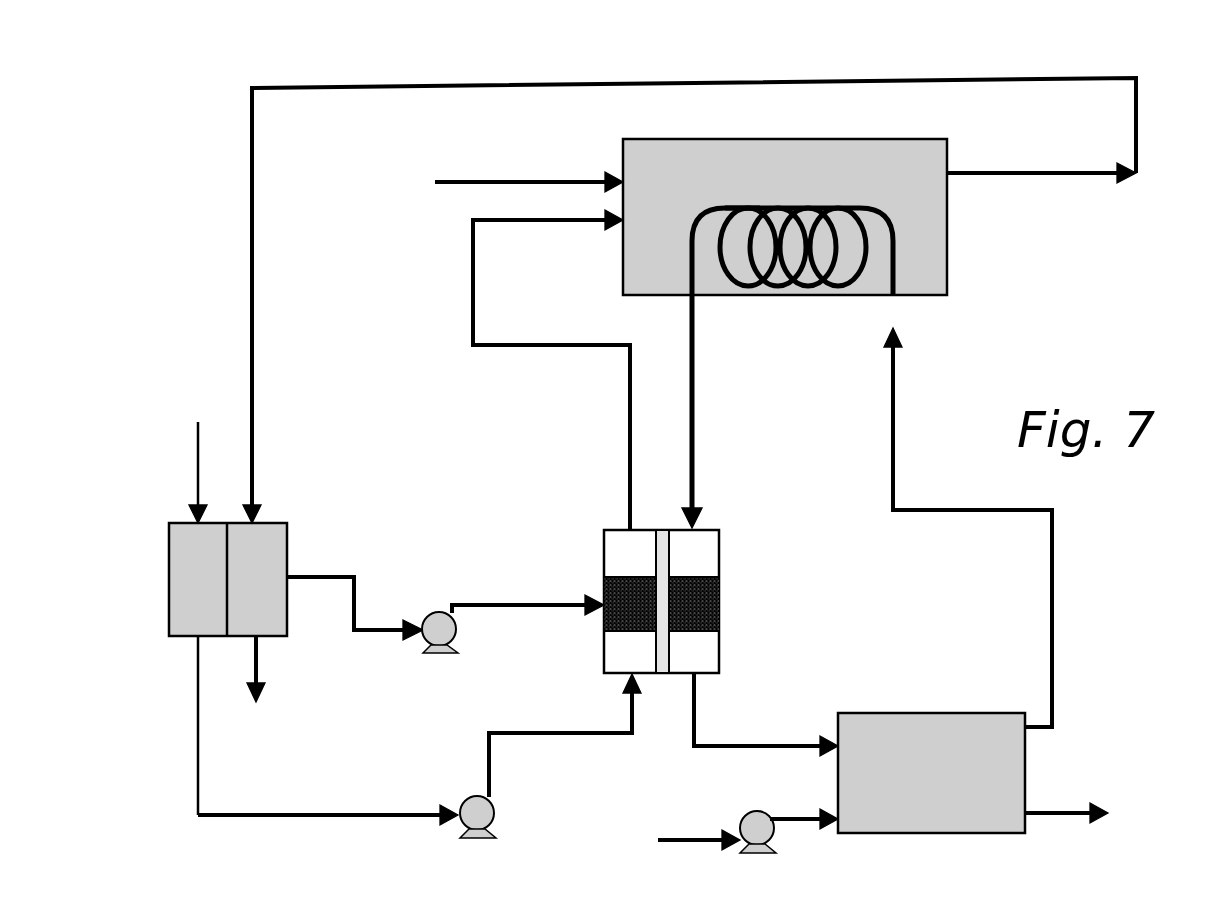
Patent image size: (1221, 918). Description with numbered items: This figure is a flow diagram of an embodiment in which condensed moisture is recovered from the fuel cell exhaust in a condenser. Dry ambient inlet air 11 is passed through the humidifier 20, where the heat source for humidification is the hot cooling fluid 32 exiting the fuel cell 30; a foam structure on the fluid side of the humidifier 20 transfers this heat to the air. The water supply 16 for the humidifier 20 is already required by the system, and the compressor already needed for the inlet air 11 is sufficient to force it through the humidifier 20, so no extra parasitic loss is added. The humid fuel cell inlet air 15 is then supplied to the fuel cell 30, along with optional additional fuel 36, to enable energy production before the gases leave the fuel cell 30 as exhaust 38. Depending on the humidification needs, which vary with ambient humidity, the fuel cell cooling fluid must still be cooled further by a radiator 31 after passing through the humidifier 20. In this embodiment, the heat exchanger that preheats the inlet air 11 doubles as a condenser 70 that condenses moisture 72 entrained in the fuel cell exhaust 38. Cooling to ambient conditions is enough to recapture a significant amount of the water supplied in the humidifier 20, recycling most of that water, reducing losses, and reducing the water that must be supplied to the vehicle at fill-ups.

The inlet air 11 is at (487, 772).
The humid fuel cell inlet air 15 is at (473, 298).
The water supply 16 is at (562, 602).
The humidifier 20 is at (688, 602).
The fuel cell 30 is at (918, 250).
The radiator 31 is at (873, 738).
The hot cooling fluid 32 is at (693, 435).
The additional fuel 36 is at (502, 178).
The exhaust 38 is at (963, 177).
The condenser 70 is at (277, 543).
The moisture 72 is at (307, 582).